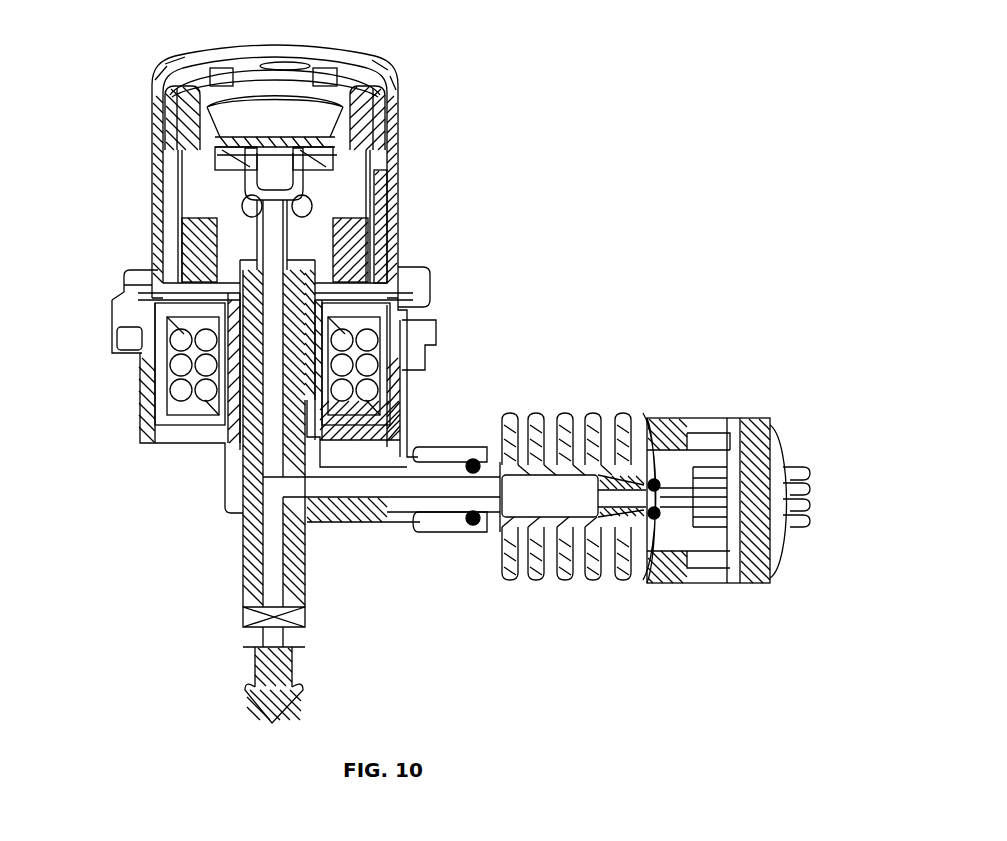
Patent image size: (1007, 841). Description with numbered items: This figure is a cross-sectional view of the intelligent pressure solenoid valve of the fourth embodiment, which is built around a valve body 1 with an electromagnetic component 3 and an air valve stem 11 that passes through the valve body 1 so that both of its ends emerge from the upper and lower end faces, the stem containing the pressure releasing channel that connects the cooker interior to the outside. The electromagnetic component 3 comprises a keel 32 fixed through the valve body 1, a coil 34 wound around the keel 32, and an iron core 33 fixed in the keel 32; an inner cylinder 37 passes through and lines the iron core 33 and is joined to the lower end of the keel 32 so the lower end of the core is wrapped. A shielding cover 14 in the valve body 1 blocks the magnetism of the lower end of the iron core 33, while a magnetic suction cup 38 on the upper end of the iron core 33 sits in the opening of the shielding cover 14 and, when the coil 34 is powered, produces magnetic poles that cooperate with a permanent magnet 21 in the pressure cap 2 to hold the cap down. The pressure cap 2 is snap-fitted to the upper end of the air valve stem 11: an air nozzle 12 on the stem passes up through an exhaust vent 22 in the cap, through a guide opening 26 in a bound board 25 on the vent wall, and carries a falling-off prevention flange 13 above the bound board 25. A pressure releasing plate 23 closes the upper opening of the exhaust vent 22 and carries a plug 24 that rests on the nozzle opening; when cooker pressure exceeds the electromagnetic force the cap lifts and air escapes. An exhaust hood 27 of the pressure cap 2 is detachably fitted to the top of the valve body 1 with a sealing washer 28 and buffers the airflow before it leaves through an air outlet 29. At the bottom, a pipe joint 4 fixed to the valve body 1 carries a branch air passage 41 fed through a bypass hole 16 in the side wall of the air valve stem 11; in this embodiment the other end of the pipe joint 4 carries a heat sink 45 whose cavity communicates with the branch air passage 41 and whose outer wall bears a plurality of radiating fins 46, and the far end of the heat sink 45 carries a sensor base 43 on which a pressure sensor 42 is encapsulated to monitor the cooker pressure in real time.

The valve body 1 is at (402, 400).
The pressure cap 2 is at (200, 182).
The electromagnetic component 3 is at (165, 332).
The pipe joint 4 is at (385, 513).
The air valve stem 11 is at (258, 580).
The air nozzle 12 is at (308, 235).
The falling-off prevention flange 13 is at (318, 210).
The shielding cover 14 is at (207, 420).
The bypass hole 16 is at (300, 483).
The permanent magnet 21 is at (210, 262).
The exhaust vent 22 is at (175, 148).
The pressure releasing plate 23 is at (343, 153).
The plug 24 is at (325, 183).
The bound board 25 is at (205, 230).
The guide opening 26 is at (365, 265).
The exhaust hood 27 is at (160, 100).
The sealing washer 28 is at (372, 300).
The air outlet 29 is at (215, 57).
The keel 32 is at (402, 373).
The iron core 33 is at (410, 332).
The coil 34 is at (175, 365).
The inner cylinder 37 is at (210, 400).
The magnetic suction cup 38 is at (215, 303).
The branch air passage 41 is at (447, 493).
The pressure sensor 42 is at (718, 510).
The sensor base 43 is at (662, 567).
The heat sink 45 is at (535, 490).
The radiating fins 46 is at (588, 512).